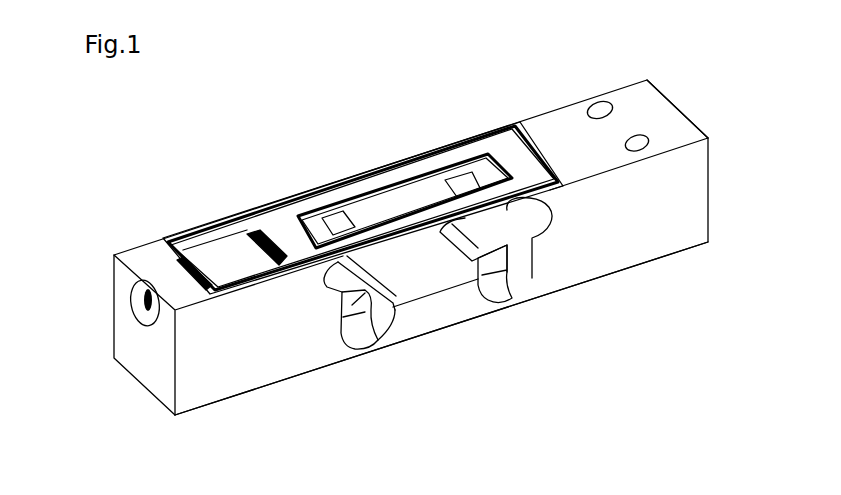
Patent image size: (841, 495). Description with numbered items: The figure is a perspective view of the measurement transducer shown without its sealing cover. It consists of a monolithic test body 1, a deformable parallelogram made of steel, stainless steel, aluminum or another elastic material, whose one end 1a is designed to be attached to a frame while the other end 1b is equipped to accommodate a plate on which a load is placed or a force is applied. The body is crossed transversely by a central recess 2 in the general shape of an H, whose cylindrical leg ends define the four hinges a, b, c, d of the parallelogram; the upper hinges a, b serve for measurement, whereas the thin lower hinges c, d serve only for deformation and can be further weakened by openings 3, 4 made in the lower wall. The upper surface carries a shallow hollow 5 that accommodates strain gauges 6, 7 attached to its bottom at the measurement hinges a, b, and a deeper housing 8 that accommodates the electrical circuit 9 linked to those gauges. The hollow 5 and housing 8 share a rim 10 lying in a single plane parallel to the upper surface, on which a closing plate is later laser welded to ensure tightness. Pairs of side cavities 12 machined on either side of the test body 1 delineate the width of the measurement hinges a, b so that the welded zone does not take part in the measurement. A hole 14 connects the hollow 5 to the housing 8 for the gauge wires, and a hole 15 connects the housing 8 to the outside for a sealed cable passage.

The monolithic test body 1 is at (655, 243).
The end attached to frame 1a is at (233, 399).
The end accommodating plate 1b is at (660, 123).
The central recess 2 is at (428, 277).
The opening 3 is at (356, 343).
The opening 4 is at (542, 281).
The hollow 5 is at (395, 198).
The strain gauge 6 is at (460, 180).
The strain gauge 7 is at (335, 223).
The housing 8 is at (220, 233).
The electrical circuit 9 is at (212, 263).
The rim 10 is at (157, 240).
The side cavity 12 is at (540, 214).
The hole 14 is at (280, 255).
The hole 15 is at (140, 305).
The measurement hinge a is at (362, 265).
The measurement hinge b is at (493, 218).
The lower hinge c is at (370, 333).
The lower hinge d is at (513, 287).